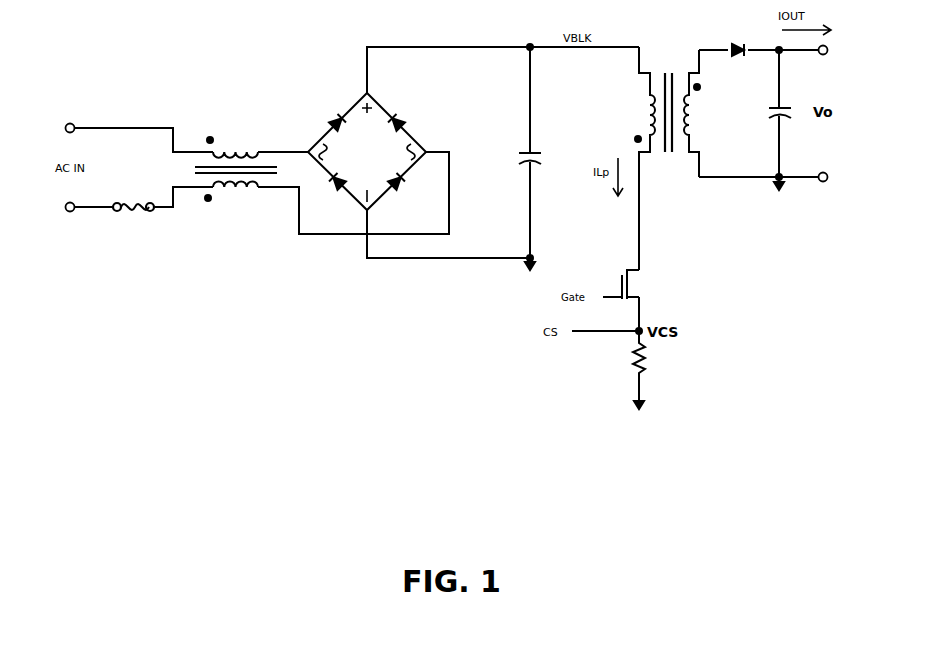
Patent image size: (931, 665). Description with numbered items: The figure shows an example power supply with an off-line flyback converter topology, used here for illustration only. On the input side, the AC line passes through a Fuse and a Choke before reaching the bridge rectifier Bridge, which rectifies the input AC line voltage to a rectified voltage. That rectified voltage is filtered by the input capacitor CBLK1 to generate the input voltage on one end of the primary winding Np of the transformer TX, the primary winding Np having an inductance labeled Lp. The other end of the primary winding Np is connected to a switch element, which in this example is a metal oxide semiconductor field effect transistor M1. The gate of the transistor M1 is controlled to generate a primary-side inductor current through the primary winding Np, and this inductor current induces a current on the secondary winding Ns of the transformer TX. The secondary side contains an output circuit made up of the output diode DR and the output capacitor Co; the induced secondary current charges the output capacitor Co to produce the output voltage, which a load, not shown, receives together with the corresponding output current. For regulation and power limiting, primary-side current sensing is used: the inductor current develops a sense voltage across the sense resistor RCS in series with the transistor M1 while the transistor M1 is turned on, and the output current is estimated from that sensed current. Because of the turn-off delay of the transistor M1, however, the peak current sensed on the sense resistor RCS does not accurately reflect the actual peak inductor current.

The fuse Fuse is at (140, 214).
The common-mode choke Choke is at (236, 177).
The bridge rectifier Bridge is at (363, 151).
The input capacitor CBLK1 is at (503, 152).
The transformer TX is at (666, 148).
The primary winding Np is at (634, 158).
The secondary winding Ns is at (701, 113).
The primary inductance Lp is at (653, 172).
The output diode DR is at (739, 36).
The output capacitor Co is at (764, 113).
The metal oxide semiconductor field effect transistor M1 is at (639, 300).
The sense resistor RCS is at (616, 364).